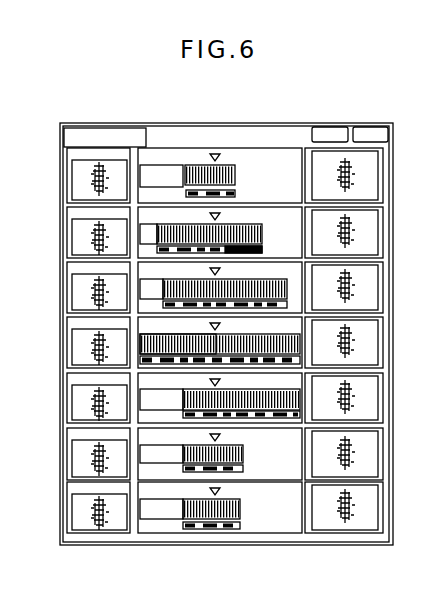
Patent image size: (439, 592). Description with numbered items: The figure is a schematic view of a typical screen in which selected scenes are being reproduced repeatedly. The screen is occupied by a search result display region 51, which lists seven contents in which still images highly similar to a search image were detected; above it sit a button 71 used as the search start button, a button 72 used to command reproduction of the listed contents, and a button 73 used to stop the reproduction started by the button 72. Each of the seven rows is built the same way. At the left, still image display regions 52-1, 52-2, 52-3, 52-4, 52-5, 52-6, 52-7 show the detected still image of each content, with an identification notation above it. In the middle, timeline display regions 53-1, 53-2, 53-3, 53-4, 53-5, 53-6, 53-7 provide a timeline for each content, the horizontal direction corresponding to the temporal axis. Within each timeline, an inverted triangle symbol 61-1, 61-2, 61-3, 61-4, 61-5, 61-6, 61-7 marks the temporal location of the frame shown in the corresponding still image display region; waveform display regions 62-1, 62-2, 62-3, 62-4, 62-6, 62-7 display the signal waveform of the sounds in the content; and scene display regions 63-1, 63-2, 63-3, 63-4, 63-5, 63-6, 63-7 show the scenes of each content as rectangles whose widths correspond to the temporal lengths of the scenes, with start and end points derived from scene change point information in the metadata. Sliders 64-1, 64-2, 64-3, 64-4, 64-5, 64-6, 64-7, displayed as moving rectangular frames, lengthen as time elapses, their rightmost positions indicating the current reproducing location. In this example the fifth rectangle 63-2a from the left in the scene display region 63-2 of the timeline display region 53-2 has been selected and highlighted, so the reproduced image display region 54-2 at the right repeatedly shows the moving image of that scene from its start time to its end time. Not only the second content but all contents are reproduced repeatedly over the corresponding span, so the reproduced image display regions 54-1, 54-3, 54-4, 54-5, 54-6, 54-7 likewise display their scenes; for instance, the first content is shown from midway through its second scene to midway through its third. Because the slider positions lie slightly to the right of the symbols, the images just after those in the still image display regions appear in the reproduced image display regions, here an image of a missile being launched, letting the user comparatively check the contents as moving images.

The search result display region 51 is at (63, 541).
The button 71 is at (108, 126).
The button 72 is at (334, 126).
The button 73 is at (374, 126).
The still image display region 52-1 is at (67, 177).
The still image display region 52-2 is at (67, 236).
The still image display region 52-3 is at (67, 291).
The still image display region 52-4 is at (67, 346).
The still image display region 52-5 is at (67, 402).
The still image display region 52-6 is at (67, 457).
The still image display region 52-7 is at (67, 512).
The timeline display region 53-1 is at (335, 151).
The timeline display region 53-2 is at (335, 208).
The timeline display region 53-3 is at (312, 289).
The timeline display region 53-4 is at (335, 318).
The timeline display region 53-5 is at (335, 374).
The timeline display region 53-6 is at (335, 430).
The timeline display region 53-7 is at (335, 485).
The reproduced image display region 54-1 is at (378, 168).
The reproduced image display region 54-2 is at (378, 224).
The reproduced image display region 54-3 is at (378, 272).
The reproduced image display region 54-4 is at (378, 332).
The reproduced image display region 54-5 is at (378, 390).
The reproduced image display region 54-6 is at (378, 448).
The reproduced image display region 54-7 is at (378, 502).
The inverted triangle symbol 61-1 is at (221, 158).
The inverted triangle symbol 61-2 is at (221, 217).
The inverted triangle symbol 61-3 is at (221, 272).
The inverted triangle symbol 61-4 is at (221, 327).
The inverted triangle symbol 61-5 is at (221, 383).
The inverted triangle symbol 61-6 is at (221, 438).
The inverted triangle symbol 61-7 is at (221, 492).
The waveform display region 62-1 is at (237, 176).
The waveform display region 62-2 is at (264, 233).
The waveform display region 62-3 is at (267, 283).
The waveform display region 62-4 is at (267, 338).
The waveform display region 62-6 is at (245, 455).
The waveform display region 62-7 is at (243, 510).
The scene display region 63-1 is at (237, 192).
The scene display region 63-2 is at (264, 248).
The rectangle 63-2a is at (264, 252).
The scene display region 63-3 is at (288, 304).
The scene display region 63-4 is at (297, 366).
The scene display region 63-5 is at (183, 415).
The scene display region 63-6 is at (245, 467).
The scene display region 63-7 is at (243, 524).
The slider 64-1 is at (148, 170).
The slider 64-2 is at (148, 229).
The slider 64-3 is at (148, 284).
The slider 64-4 is at (148, 339).
The slider 64-5 is at (148, 394).
The slider 64-6 is at (148, 450).
The slider 64-7 is at (148, 504).